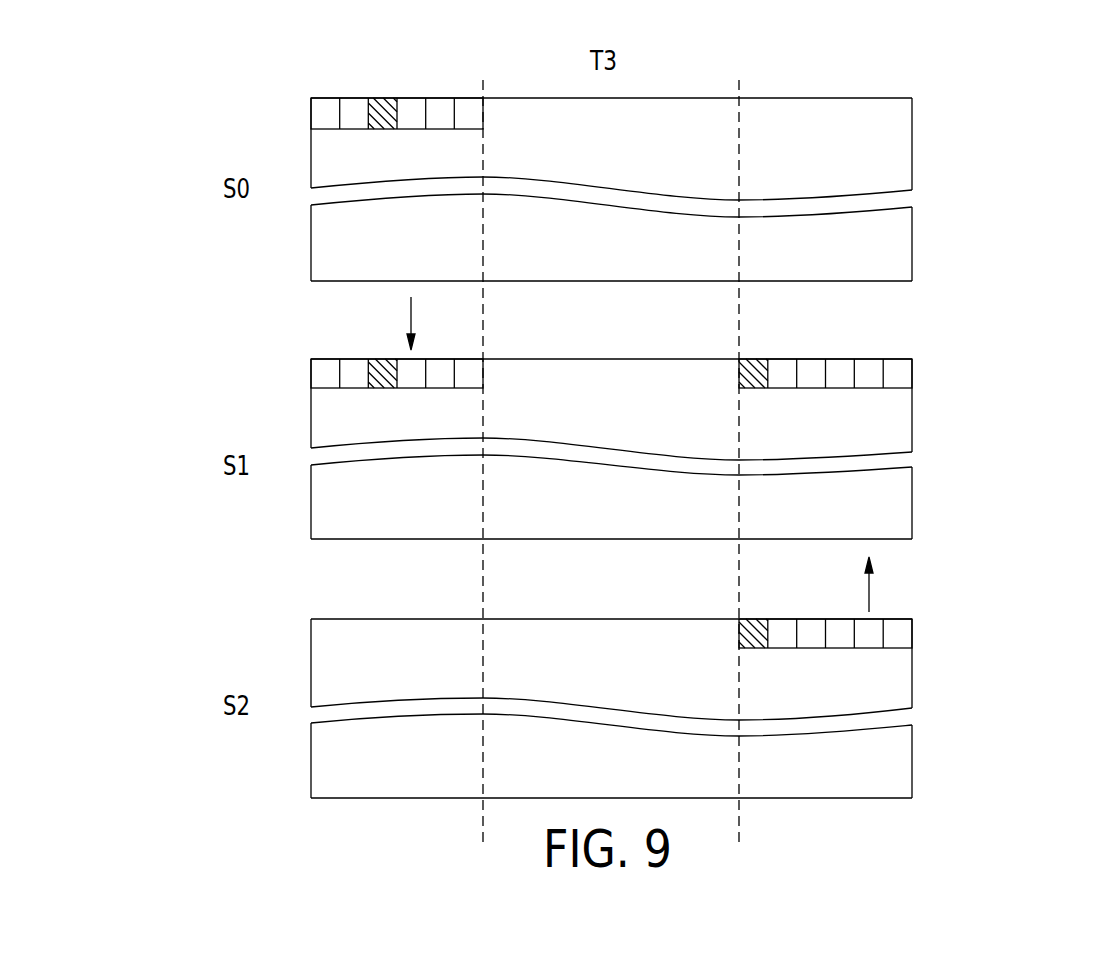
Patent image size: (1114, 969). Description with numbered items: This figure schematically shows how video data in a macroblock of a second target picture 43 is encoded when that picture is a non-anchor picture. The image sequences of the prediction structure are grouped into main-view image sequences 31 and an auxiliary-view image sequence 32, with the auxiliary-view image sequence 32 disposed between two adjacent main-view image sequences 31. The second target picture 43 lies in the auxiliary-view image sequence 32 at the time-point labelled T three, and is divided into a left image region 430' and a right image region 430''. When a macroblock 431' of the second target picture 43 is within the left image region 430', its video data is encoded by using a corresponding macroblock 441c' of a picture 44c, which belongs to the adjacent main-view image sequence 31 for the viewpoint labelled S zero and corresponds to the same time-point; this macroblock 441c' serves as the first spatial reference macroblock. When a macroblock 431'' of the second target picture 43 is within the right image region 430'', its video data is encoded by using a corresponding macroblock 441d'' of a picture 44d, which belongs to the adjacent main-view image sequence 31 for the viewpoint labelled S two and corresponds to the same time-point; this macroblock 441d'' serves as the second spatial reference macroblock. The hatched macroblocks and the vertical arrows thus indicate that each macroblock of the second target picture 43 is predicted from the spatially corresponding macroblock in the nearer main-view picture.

The main-view image sequence 31 is at (290, 116).
The auxiliary-view image sequence 32 is at (290, 380).
The second target picture 43 is at (622, 359).
The left image region 430' is at (332, 357).
The right image region 430'' is at (900, 359).
The macroblock 431' is at (386, 339).
The macroblock 431'' is at (771, 339).
The picture 44c is at (678, 97).
The macroblock 441c' is at (391, 81).
The picture 44d is at (892, 615).
The macroblock 441d'' is at (778, 599).